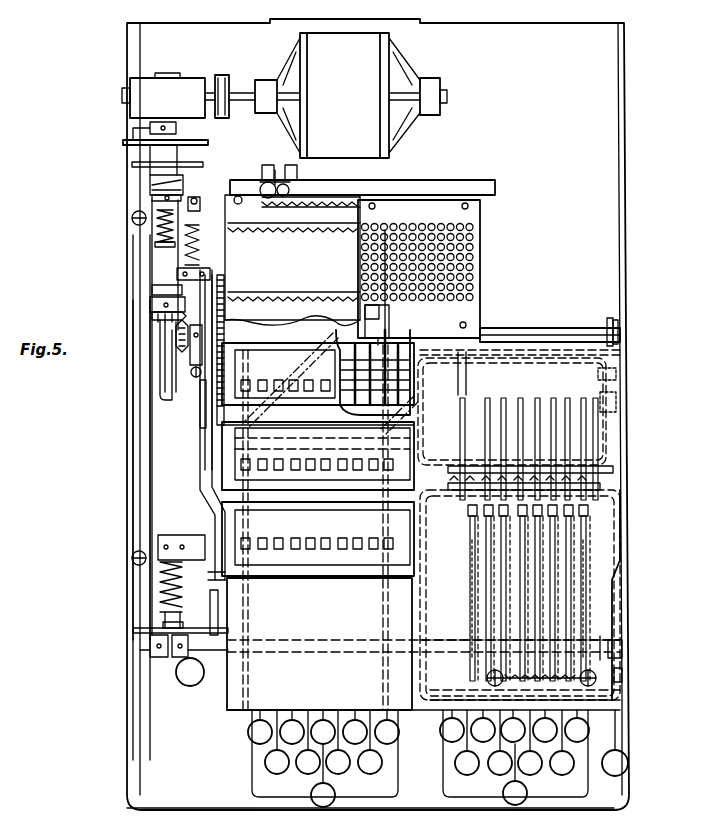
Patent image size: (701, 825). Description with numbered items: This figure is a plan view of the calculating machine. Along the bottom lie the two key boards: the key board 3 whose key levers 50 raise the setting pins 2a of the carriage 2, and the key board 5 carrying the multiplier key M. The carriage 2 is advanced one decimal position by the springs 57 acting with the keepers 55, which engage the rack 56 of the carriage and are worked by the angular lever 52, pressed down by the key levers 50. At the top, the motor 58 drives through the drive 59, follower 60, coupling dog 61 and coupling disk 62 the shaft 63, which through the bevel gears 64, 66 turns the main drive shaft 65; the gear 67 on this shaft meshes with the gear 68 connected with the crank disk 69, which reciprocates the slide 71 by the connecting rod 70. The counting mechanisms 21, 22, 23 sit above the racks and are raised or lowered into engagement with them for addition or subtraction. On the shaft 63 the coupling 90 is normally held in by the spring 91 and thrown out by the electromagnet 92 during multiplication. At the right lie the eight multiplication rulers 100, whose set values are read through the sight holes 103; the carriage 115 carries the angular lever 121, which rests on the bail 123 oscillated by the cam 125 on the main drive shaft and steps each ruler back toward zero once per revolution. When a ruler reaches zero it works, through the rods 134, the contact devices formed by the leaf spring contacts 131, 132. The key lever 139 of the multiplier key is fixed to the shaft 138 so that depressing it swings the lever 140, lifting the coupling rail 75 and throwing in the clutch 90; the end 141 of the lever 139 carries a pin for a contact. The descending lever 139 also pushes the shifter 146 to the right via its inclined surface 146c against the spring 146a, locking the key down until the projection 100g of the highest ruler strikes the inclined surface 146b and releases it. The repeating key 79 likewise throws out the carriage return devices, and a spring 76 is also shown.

The carriage 2 is at (474, 262).
The setting pins 2a is at (470, 232).
The key board 3 is at (262, 785).
The key board 5 is at (578, 785).
The counting mechanism 21 is at (318, 539).
The counting mechanism 22 is at (318, 456).
The counting mechanism 23 is at (318, 374).
The key levers 50 is at (252, 592).
The angular lever 52 is at (274, 180).
The keepers 55 is at (300, 180).
The rack 56 is at (322, 210).
The springs 57 is at (270, 297).
The motor 58 is at (370, 77).
The drive 59 is at (190, 88).
The follower 60 is at (176, 128).
The coupling dog 61 is at (222, 118).
The coupling disk 62 is at (208, 143).
The shaft 63 is at (165, 378).
The bevel gear 64 is at (160, 307).
The main drive shaft 65 is at (177, 323).
The bevel gear 66 is at (197, 330).
The gear 67 is at (225, 284).
The gear 68 is at (215, 422).
The crank disk 69 is at (208, 382).
The connecting rod 70 is at (201, 482).
The slide 71 is at (213, 618).
The coupling rail 75 is at (145, 517).
The spring 76 is at (178, 592).
The repeating key 79 is at (189, 686).
The coupling 90 is at (183, 192).
The spring 91 is at (160, 228).
The electromagnet 92 is at (188, 250).
The racks 100 is at (488, 550).
The upward projection 100g is at (465, 676).
The sight holes 103 is at (470, 516).
The carriage 115 is at (468, 425).
The lever 121 is at (462, 392).
The bail 123 is at (540, 358).
The cam 125 is at (608, 325).
The leaf spring contact 131 is at (600, 466).
The leaf spring contact 132 is at (598, 484).
The rods 134 is at (480, 583).
The shaft 138 is at (333, 645).
The key lever 139 is at (632, 590).
The lever 140 is at (155, 657).
The end of lever 141 is at (618, 402).
The shifter 146 is at (593, 650).
The spring 146a is at (540, 655).
The inclined surface 146b is at (495, 670).
The inclined surface 146c is at (620, 672).